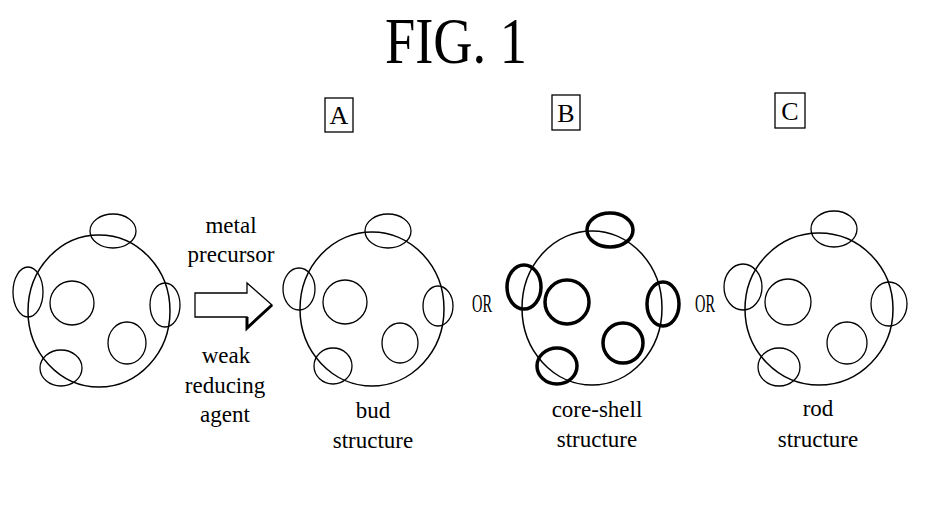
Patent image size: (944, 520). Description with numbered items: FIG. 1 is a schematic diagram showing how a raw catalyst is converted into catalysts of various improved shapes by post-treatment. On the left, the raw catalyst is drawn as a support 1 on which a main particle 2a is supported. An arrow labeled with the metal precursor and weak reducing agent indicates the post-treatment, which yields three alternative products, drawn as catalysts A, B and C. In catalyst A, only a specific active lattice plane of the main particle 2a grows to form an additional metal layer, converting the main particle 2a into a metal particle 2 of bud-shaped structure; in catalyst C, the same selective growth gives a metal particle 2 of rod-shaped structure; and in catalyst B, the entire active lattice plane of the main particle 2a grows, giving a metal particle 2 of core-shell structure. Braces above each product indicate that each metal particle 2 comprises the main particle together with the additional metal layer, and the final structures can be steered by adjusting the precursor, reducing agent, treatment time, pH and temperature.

The support 1 is at (68, 259).
The main particle 2a is at (124, 217).
The metal particle 2 is at (397, 217).